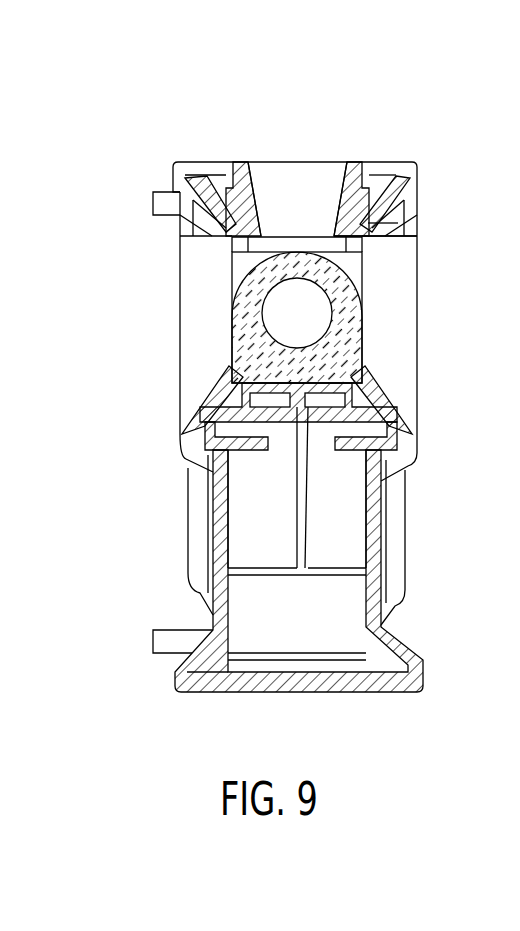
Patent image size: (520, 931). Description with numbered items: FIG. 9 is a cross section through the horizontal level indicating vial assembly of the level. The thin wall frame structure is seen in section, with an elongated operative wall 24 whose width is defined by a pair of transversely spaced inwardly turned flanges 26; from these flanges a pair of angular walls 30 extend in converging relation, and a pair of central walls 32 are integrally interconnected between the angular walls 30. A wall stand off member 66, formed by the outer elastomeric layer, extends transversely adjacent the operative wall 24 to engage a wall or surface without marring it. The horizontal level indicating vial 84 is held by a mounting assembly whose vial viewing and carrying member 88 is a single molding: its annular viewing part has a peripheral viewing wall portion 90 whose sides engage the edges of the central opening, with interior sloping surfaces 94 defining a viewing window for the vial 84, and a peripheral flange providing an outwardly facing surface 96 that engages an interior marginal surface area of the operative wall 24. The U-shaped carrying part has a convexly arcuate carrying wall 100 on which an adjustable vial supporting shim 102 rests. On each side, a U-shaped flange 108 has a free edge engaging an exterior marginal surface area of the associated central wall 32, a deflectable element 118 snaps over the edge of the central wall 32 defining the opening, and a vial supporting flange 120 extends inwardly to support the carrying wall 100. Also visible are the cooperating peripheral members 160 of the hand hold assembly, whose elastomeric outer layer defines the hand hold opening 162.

The operative wall 24 is at (190, 166).
The inwardly turned flange 26 is at (175, 177).
The angular wall 30 is at (188, 232).
The central wall 32 is at (222, 540).
The wall stand off member 66 is at (162, 202).
The horizontal level indicating vial 84 is at (366, 317).
The vial viewing and carrying member 88 is at (353, 152).
The peripheral viewing wall portion 90 is at (238, 162).
The interior sloping surface 94 is at (250, 180).
The outwardly facing surface 96 is at (222, 168).
The carrying wall 100 is at (306, 578).
The adjustable vial supporting shim 102 is at (353, 393).
The U-shaped flange 108 is at (219, 222).
The deflectable element 118 is at (257, 447).
The vial supporting flange 120 is at (268, 440).
The cooperating peripheral member 160 is at (393, 241).
The hand hold opening 162 is at (210, 393).